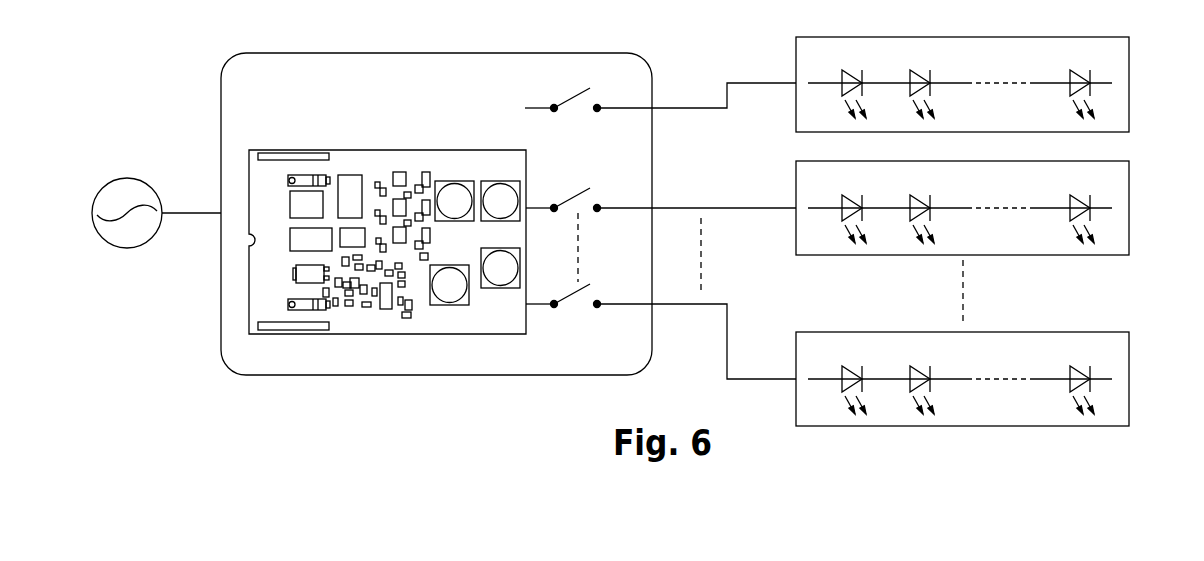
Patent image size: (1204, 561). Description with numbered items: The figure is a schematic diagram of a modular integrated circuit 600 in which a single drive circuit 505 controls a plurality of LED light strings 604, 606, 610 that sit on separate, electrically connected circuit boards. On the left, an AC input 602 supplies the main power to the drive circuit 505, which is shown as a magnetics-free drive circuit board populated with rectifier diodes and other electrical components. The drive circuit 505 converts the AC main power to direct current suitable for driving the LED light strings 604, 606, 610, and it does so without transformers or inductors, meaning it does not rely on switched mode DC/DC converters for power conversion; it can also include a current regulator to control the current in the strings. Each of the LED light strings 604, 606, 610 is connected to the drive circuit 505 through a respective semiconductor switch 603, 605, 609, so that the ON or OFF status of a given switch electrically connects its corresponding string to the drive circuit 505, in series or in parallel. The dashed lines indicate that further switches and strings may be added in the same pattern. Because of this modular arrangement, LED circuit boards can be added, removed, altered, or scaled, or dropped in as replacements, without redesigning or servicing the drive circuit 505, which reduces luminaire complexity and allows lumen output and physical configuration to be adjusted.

The modular integrated circuit 600 is at (703, 45).
The AC input 602 is at (111, 245).
The drive circuit 505 is at (352, 313).
The semiconductor switch 603 is at (556, 103).
The semiconductor switch 605 is at (575, 197).
The semiconductor switch 609 is at (572, 292).
The LED light string 604 is at (1130, 71).
The LED light string 606 is at (1130, 182).
The LED light string 610 is at (1130, 357).